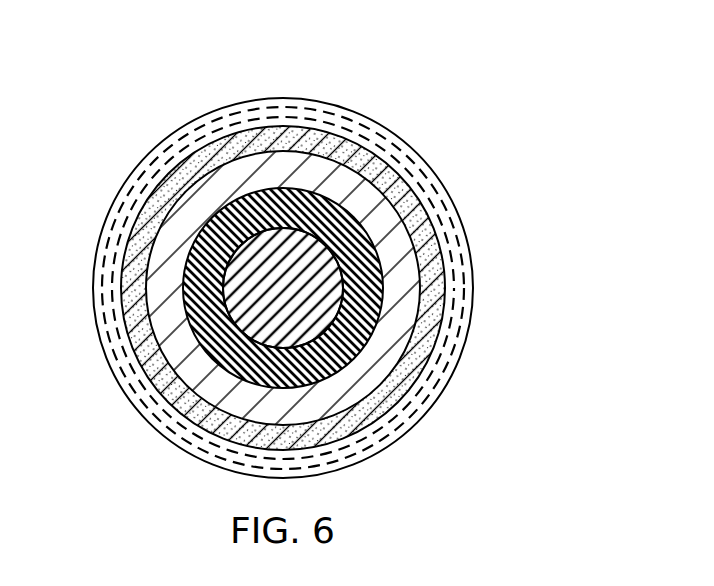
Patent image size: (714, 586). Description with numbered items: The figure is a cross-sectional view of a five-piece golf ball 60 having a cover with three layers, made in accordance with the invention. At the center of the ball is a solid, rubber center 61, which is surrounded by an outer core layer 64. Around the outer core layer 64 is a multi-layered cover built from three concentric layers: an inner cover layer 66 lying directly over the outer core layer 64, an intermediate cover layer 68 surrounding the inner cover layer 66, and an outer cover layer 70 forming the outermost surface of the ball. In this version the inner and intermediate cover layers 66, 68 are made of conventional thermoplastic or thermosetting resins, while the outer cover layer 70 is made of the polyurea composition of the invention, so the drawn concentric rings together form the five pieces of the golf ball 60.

The five-piece golf ball 60 is at (453, 78).
The rubber center 61 is at (322, 270).
The outer core layer 64 is at (350, 300).
The inner cover layer 66 is at (397, 347).
The intermediate cover layer 68 is at (427, 368).
The outer cover layer 70 is at (442, 400).